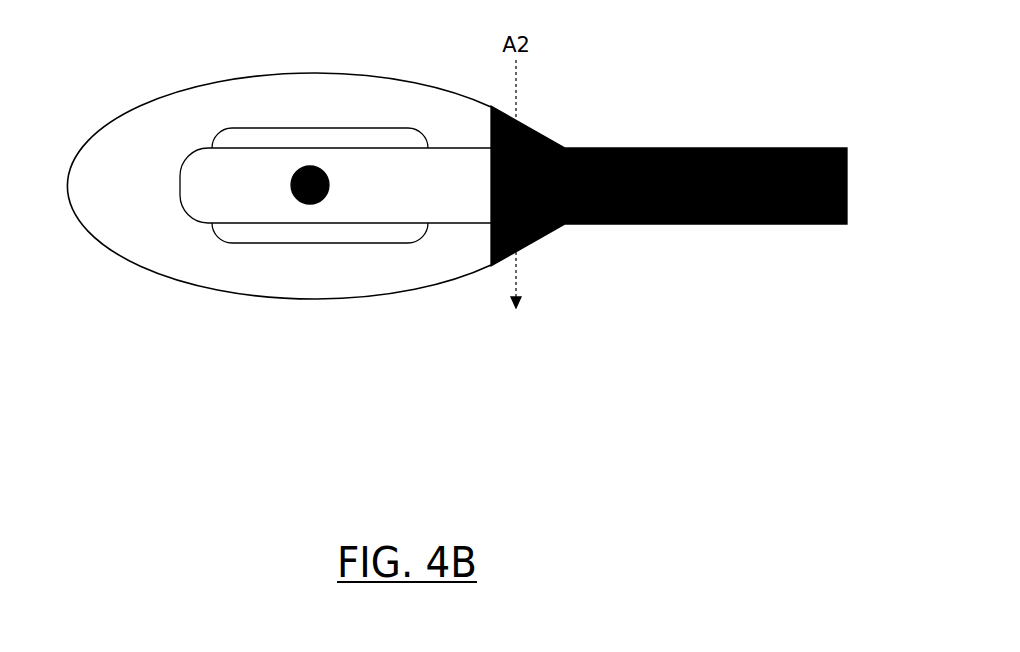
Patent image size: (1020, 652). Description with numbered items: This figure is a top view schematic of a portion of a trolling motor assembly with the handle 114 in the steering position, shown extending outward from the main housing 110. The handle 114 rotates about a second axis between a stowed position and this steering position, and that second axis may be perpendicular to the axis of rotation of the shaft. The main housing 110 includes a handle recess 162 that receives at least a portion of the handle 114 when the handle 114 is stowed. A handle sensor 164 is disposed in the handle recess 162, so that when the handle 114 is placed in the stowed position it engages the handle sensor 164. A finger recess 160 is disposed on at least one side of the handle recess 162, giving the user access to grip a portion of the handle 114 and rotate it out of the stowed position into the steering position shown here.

The main housing 110 is at (170, 98).
The handle 114 is at (697, 148).
The finger recess 160 is at (290, 132).
The handle recess 162 is at (207, 222).
The handle sensor 164 is at (307, 203).